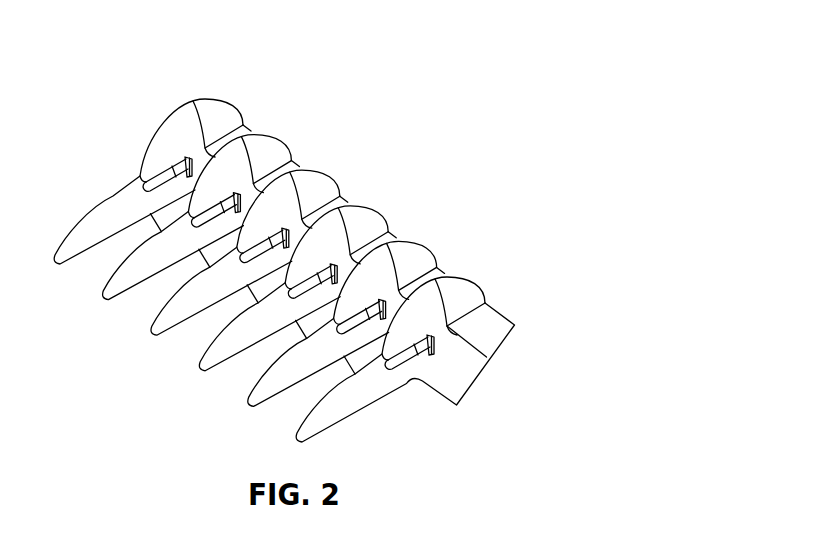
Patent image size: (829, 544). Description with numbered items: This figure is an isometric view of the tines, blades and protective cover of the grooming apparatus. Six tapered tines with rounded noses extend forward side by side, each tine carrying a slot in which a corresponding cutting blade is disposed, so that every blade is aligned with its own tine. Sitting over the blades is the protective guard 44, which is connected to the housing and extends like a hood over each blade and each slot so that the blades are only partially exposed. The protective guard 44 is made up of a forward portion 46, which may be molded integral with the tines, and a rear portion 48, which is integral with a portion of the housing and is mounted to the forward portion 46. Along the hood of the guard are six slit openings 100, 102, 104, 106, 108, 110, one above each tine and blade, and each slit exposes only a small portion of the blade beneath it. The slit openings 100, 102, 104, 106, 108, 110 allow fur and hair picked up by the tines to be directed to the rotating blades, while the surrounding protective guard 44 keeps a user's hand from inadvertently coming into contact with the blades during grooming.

The protective guard 44 is at (358, 210).
The forward portion 46 is at (355, 379).
The rear portion 48 is at (419, 236).
The slit opening 100 is at (419, 338).
The slit opening 102 is at (376, 305).
The slit opening 104 is at (322, 262).
The slit opening 106 is at (275, 195).
The slit opening 108 is at (230, 202).
The slit opening 110 is at (185, 162).